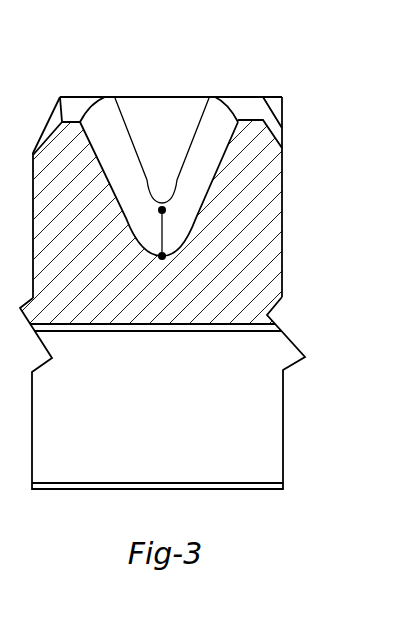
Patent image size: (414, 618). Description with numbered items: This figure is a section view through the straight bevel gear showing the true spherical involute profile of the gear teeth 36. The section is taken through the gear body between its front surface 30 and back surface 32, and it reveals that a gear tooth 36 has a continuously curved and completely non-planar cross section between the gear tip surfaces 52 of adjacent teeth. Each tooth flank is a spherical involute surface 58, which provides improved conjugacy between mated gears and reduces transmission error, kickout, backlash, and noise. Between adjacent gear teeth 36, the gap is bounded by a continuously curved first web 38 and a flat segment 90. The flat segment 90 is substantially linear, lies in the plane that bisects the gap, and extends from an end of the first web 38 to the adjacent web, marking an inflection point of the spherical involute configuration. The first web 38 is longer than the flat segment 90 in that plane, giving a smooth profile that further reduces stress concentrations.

The front surface 30 is at (273, 98).
The back surface 32 is at (157, 490).
The gear teeth 36 is at (55, 178).
The first web 38 is at (165, 125).
The gear tip surfaces 52 is at (235, 98).
The spherical involute surface 58 is at (124, 219).
The flat segment 90 is at (162, 258).